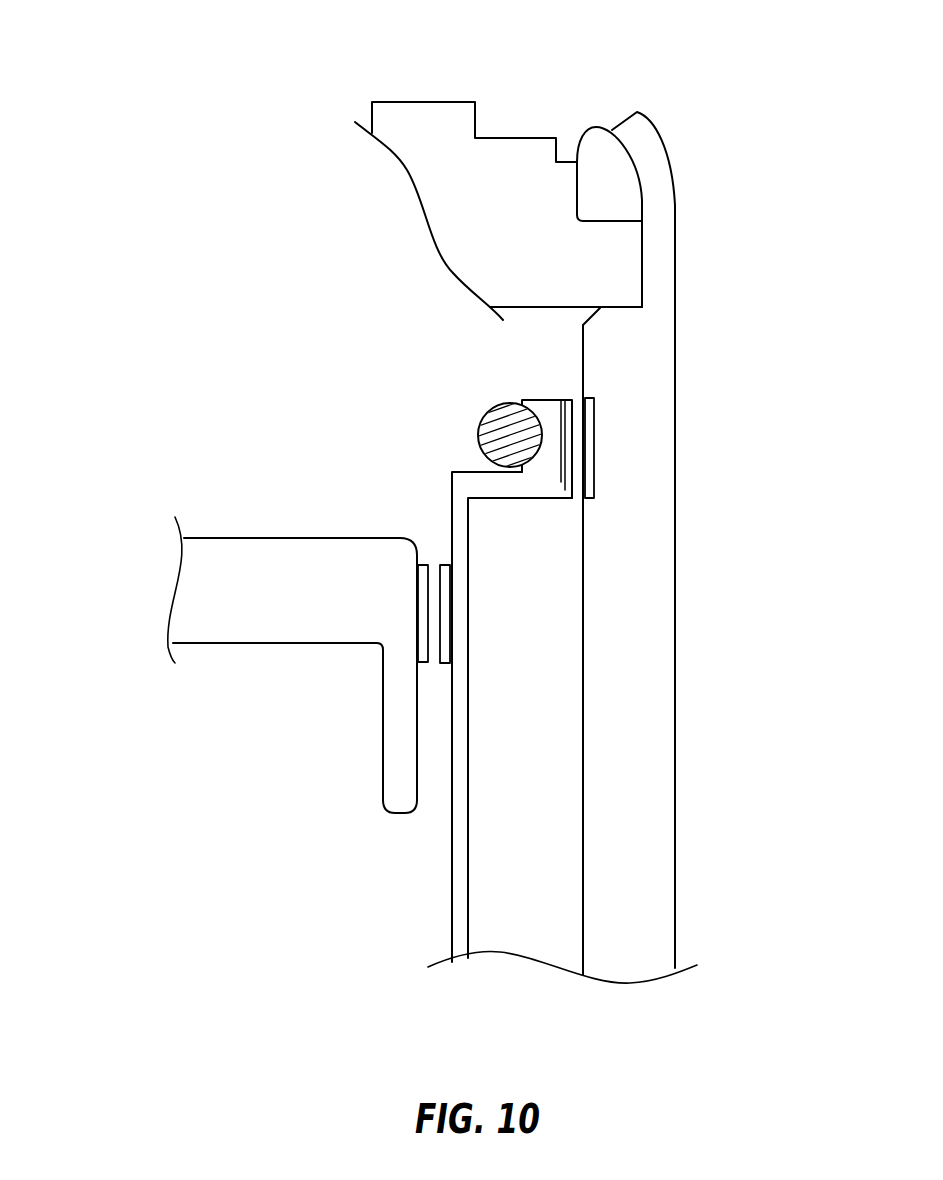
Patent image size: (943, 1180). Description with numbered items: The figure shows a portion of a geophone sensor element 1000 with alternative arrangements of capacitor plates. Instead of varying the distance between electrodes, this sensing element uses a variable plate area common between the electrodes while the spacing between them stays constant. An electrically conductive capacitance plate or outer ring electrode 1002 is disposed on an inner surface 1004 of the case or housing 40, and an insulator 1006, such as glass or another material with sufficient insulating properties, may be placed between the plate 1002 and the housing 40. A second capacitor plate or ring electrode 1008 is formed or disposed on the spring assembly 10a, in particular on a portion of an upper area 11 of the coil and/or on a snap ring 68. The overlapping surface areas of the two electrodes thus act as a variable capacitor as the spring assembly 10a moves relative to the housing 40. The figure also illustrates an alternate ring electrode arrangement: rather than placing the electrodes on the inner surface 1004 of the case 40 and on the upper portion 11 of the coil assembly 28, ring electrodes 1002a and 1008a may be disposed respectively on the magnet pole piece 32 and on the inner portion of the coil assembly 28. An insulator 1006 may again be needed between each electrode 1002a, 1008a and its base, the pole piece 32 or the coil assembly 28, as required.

The geophone sensor element 1000 is at (198, 72).
The spring assembly 10a is at (540, 398).
The insulator 1006 is at (588, 420).
The outer ring electrode 1002 is at (588, 449).
The ring electrode 1008 is at (562, 479).
The snap ring 68 is at (508, 412).
The upper area of the coil 11 is at (460, 470).
The magnet pole piece 32 is at (275, 547).
The ring electrode 1002a is at (423, 608).
The ring electrode 1008a is at (445, 632).
The inner surface 1004 is at (583, 588).
The housing 40 is at (662, 767).
The coil assembly 28 is at (469, 882).